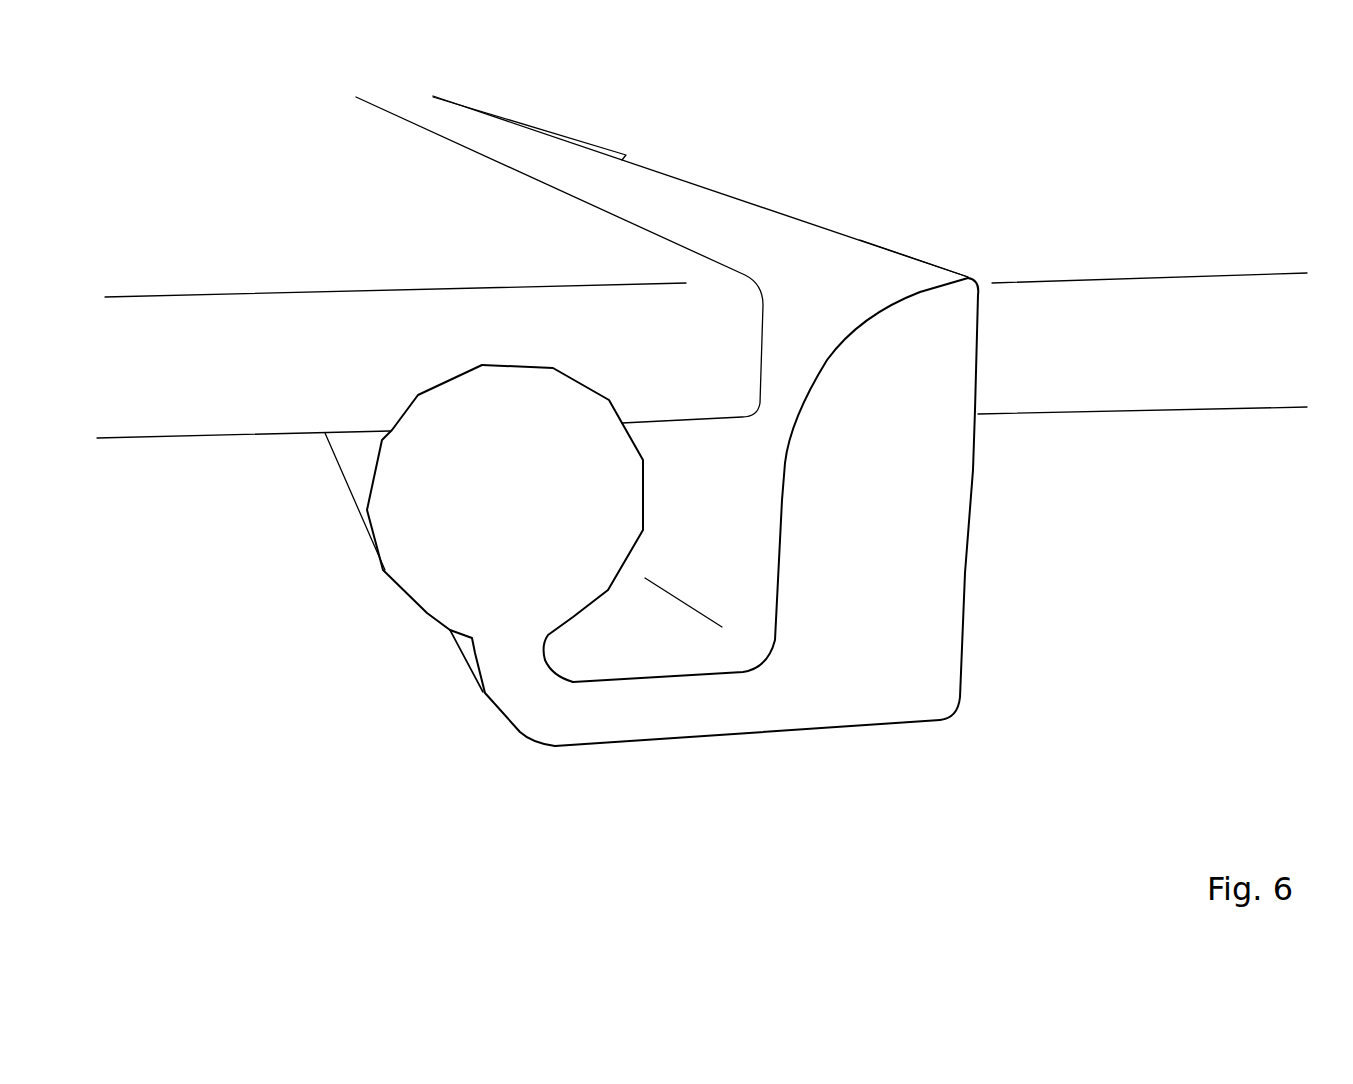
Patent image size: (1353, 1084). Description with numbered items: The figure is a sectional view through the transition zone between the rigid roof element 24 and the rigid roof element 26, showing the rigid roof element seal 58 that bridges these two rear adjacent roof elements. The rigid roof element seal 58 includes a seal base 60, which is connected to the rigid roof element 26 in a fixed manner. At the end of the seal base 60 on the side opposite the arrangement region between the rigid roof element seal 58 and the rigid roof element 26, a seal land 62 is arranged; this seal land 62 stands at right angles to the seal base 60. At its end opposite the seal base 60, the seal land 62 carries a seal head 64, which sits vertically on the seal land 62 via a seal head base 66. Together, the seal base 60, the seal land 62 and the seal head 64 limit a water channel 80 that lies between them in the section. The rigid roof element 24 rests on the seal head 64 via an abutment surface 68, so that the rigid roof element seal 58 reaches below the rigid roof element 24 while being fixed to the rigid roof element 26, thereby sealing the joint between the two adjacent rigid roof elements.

The rigid roof element 24 is at (265, 226).
The rigid roof element 26 is at (1088, 151).
The rigid roof element seal 58 is at (899, 253).
The seal base 60 is at (965, 573).
The seal land 62 is at (720, 740).
The seal head 64 is at (390, 593).
The seal head base 66 is at (485, 677).
The abutment surface 68 is at (160, 439).
The water channel 80 is at (650, 678).